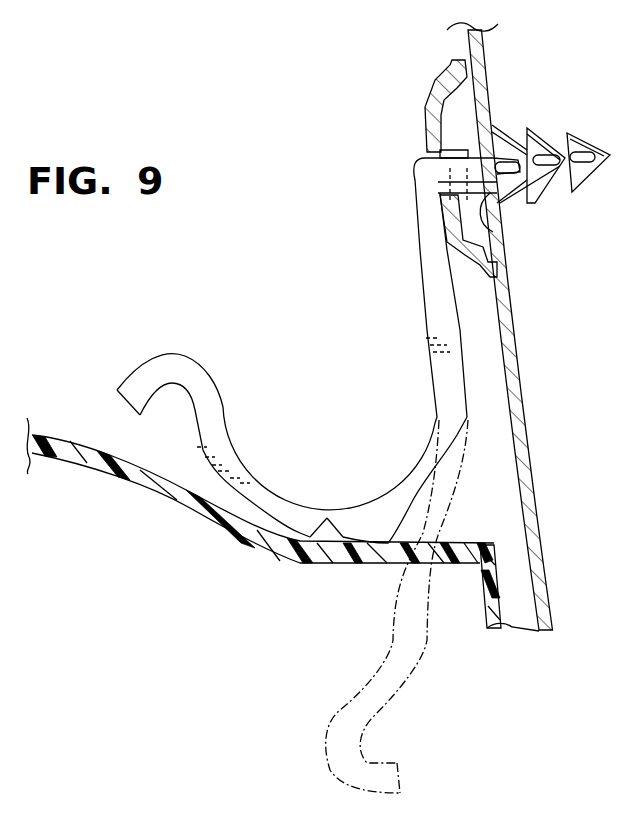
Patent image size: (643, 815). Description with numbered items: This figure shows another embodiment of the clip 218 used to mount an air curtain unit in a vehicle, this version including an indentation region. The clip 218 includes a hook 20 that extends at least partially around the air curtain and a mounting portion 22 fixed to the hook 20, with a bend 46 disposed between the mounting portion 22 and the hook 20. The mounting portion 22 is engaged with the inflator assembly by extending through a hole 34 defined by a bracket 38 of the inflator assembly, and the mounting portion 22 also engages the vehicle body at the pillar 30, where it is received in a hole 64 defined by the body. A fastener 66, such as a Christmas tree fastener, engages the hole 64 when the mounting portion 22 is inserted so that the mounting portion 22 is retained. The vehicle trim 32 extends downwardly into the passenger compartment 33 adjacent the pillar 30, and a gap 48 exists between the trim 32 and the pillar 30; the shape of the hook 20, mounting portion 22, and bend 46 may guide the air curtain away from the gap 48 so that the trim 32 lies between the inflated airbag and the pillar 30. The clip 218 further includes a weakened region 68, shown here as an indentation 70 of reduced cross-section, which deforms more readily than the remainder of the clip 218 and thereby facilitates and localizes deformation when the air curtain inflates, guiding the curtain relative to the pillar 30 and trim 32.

The hook 20 is at (205, 418).
The mounting portion 22 is at (498, 118).
The pillar 30 is at (548, 610).
The trim 32 is at (490, 603).
The passenger compartment 33 is at (101, 661).
The hole 34 is at (447, 153).
The bracket 38 is at (436, 98).
The bend 46 is at (423, 473).
The gap 48 is at (520, 615).
The hole 64 is at (493, 195).
The fastener 66 is at (540, 147).
The weakened region 68 is at (328, 535).
The indentation 70 is at (316, 542).
The clip 218 is at (360, 245).